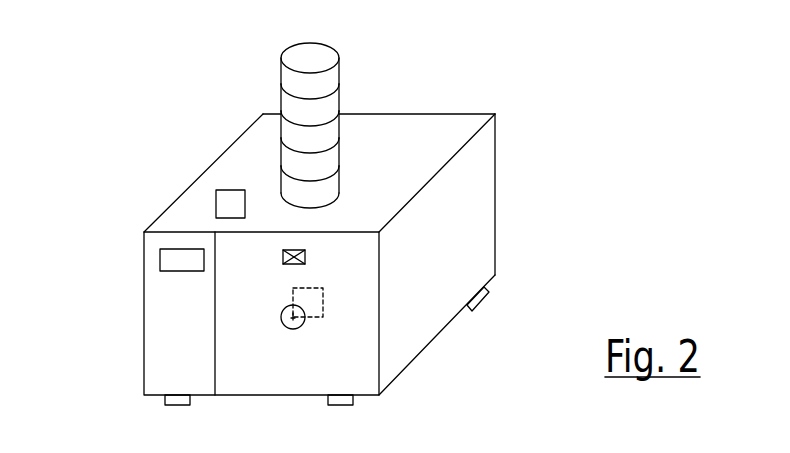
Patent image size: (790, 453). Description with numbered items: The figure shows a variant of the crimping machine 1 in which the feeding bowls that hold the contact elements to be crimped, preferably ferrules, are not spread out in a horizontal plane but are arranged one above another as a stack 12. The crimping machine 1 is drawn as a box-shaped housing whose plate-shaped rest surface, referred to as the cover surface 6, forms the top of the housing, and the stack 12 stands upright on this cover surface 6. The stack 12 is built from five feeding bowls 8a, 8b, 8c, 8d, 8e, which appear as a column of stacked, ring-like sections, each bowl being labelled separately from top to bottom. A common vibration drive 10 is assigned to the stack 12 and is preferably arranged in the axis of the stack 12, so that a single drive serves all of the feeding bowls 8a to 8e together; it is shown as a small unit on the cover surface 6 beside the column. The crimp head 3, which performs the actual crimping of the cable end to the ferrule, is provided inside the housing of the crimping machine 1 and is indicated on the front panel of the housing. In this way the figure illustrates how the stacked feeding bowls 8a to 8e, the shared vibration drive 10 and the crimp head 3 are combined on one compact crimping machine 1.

The crimping machine 1 is at (437, 252).
The crimp head 3 is at (298, 300).
The cover surface 6 is at (196, 226).
The feeding bowl 8a is at (328, 78).
The feeding bowl 8b is at (320, 107).
The feeding bowl 8c is at (327, 137).
The feeding bowl 8d is at (327, 163).
The feeding bowl 8e is at (320, 192).
The common vibration drive 10 is at (223, 205).
The stack 12 is at (363, 108).